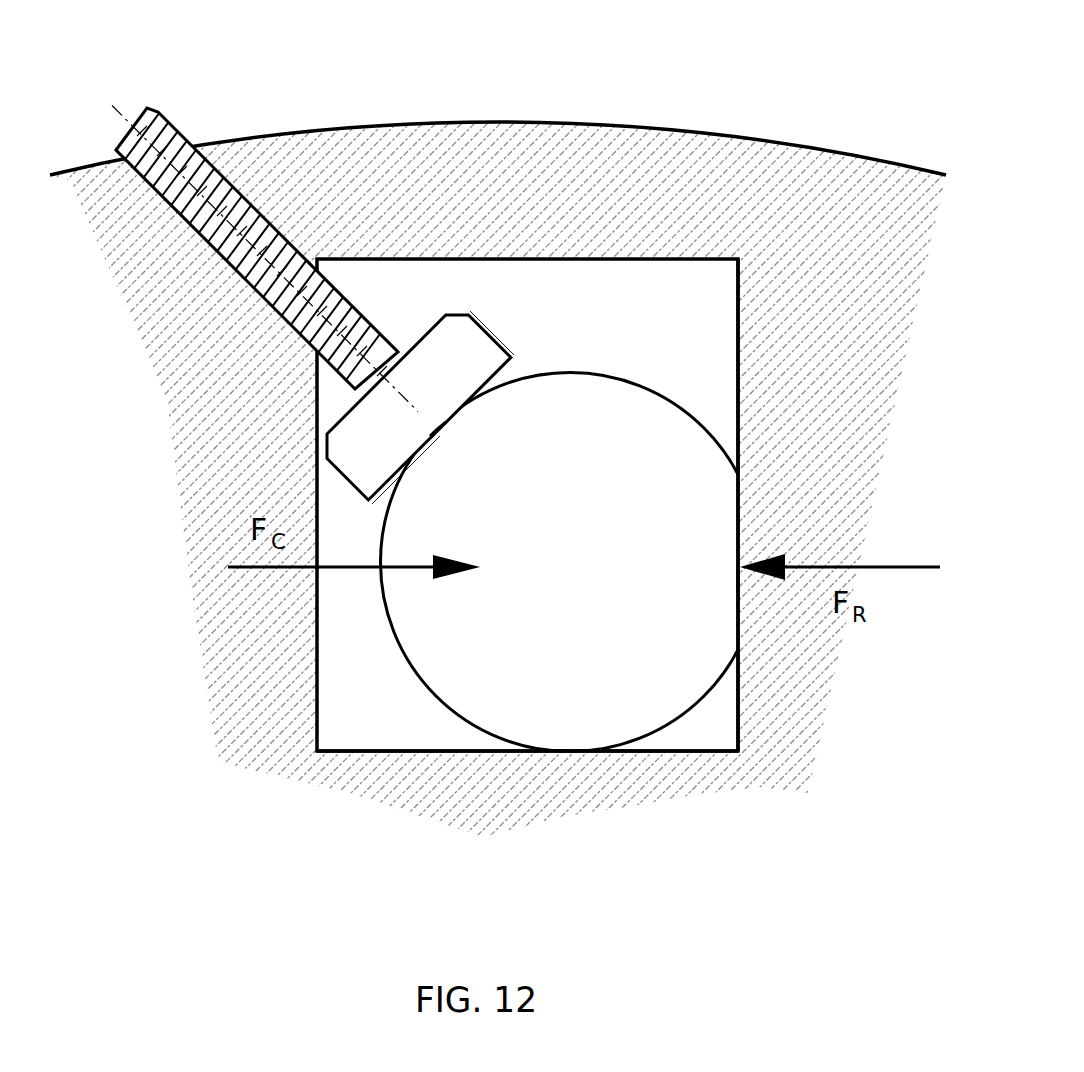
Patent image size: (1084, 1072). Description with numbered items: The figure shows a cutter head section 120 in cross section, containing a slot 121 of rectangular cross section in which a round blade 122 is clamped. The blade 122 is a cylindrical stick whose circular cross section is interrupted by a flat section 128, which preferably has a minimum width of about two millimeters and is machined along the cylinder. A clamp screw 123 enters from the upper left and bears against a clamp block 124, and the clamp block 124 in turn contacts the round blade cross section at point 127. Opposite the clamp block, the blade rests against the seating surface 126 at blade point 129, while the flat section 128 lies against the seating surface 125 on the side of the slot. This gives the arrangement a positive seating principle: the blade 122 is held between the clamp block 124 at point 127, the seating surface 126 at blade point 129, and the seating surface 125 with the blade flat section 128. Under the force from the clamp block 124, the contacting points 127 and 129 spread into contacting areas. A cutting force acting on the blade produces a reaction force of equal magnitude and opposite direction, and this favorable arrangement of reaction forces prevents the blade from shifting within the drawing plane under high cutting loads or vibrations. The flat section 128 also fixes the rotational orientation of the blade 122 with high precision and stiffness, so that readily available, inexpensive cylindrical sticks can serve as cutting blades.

The cutter head section 120 is at (625, 126).
The slot 121 is at (705, 383).
The round blade 122 is at (692, 513).
The clamp screw 123 is at (242, 192).
The clamp block 124 is at (444, 354).
The seating surface 125 is at (741, 696).
The seating surface 126 is at (660, 758).
The contact point 127 is at (438, 432).
The flat section 128 is at (738, 581).
The blade point 129 is at (568, 750).